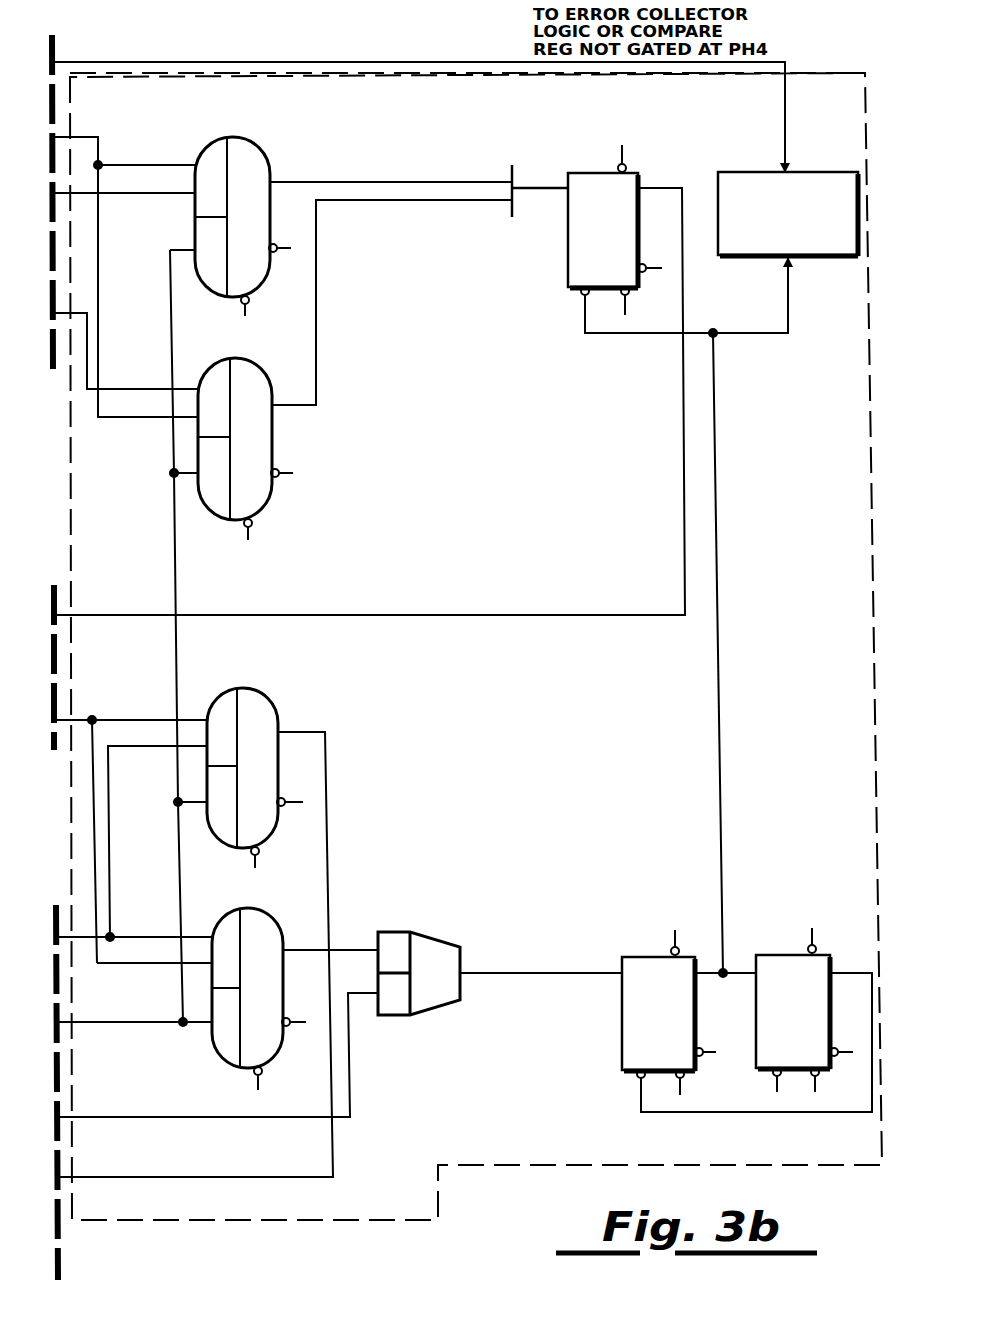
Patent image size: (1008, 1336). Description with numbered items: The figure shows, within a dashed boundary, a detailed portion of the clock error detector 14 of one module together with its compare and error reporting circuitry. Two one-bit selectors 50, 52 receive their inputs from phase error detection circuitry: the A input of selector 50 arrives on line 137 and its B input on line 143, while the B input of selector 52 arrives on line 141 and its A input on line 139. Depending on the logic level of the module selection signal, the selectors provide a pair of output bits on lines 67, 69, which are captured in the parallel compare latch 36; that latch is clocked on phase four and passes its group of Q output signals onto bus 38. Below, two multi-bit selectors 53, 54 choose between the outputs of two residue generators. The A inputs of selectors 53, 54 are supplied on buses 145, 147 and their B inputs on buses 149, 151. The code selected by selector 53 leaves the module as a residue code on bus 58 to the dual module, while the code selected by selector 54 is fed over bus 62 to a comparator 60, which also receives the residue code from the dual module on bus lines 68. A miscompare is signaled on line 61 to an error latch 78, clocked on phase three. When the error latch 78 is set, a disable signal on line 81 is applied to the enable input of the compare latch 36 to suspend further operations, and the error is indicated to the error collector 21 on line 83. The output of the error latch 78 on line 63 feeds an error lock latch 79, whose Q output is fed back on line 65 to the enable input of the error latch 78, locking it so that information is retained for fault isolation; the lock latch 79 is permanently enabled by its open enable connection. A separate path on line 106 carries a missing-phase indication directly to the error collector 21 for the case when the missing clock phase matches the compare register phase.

The clock error detector 14 is at (418, 124).
The error collector 21 is at (822, 172).
The parallel compare latch 36 is at (568, 225).
The bus 38 is at (586, 615).
The one-bit selector 50 is at (228, 137).
The one-bit selector 52 is at (235, 359).
The multi-bit selector 53 is at (240, 689).
The multi-bit selector 54 is at (250, 910).
The bus 58 is at (256, 1177).
The comparator 60 is at (433, 937).
The line 61 is at (558, 975).
The bus 62 is at (346, 950).
The line 63 is at (738, 968).
The line 65 is at (752, 1112).
The line 67 is at (368, 180).
The bus lines 68 is at (252, 1117).
The line 69 is at (380, 217).
The error latch 78 is at (622, 1000).
The lock latch 79 is at (756, 1000).
The line 81 is at (630, 337).
The line 83 is at (762, 337).
The line 106 is at (785, 98).
The line 137 is at (165, 164).
The line 139 is at (157, 419).
The line 141 is at (157, 388).
The line 143 is at (172, 197).
The bus 145 is at (160, 718).
The bus 147 is at (162, 965).
The bus 149 is at (163, 935).
The bus 151 is at (163, 748).